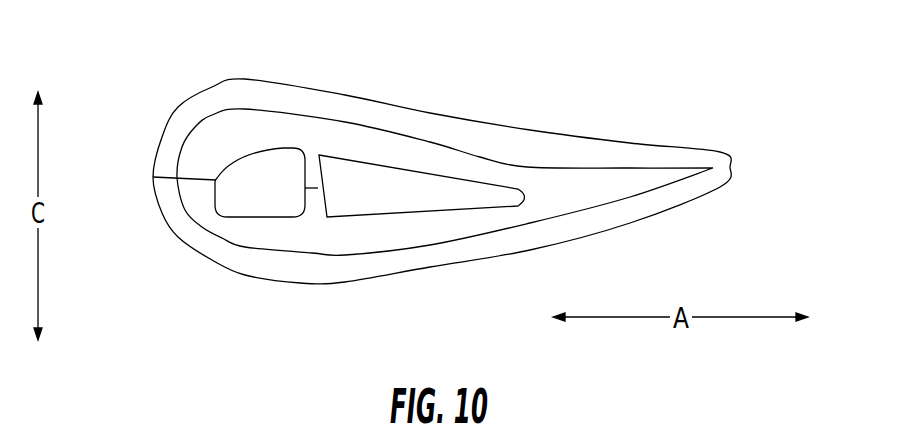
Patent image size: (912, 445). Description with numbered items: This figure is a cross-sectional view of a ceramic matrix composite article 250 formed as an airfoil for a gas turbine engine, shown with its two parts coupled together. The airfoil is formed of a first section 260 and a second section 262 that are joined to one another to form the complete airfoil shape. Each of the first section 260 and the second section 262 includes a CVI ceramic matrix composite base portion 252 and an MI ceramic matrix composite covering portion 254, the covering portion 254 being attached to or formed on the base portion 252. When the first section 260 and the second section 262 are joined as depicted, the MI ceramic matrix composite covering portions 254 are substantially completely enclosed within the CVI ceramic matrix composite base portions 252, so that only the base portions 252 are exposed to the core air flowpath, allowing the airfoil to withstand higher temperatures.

The ceramic matrix composite article 250 is at (708, 73).
The CVI ceramic matrix composite base portion 252 is at (332, 102).
The MI ceramic matrix composite covering portion 254 is at (265, 125).
The first section 260 is at (202, 72).
The second section 262 is at (342, 310).